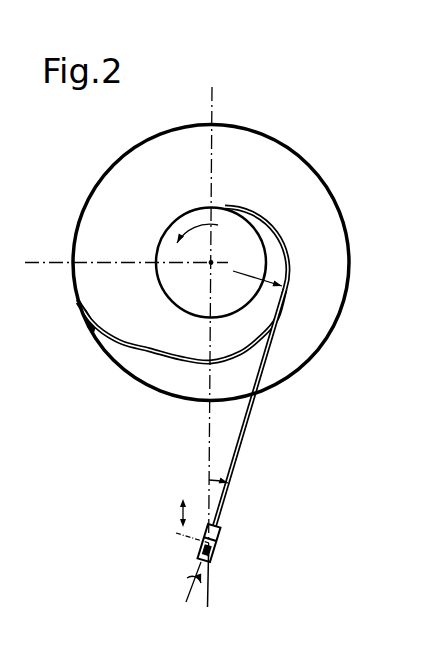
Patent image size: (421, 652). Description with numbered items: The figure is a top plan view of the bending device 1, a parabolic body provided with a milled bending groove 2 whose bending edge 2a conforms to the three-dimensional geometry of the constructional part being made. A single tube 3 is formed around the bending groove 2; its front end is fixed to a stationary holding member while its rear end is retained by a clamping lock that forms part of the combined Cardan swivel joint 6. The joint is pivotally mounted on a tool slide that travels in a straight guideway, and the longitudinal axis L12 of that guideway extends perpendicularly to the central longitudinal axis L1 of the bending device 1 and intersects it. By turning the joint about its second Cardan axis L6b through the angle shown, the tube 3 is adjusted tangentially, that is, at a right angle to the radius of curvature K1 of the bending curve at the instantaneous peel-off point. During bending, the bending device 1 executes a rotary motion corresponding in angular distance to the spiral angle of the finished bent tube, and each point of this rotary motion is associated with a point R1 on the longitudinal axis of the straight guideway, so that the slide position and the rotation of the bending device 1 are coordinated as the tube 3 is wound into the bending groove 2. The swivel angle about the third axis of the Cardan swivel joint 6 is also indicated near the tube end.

The bending device 1 is at (343, 300).
The bending groove 2 is at (125, 349).
The bending edge 2a is at (151, 351).
The tube 3 is at (241, 451).
The Cardan swivel joint 6 is at (219, 543).
The central longitudinal axis of bending device L1 is at (213, 262).
The radius of curvature K1 is at (247, 277).
The second Cardan axis L6b is at (200, 539).
The point on guideway axis R1 is at (200, 556).
The longitudinal axis of guideway L12 is at (210, 598).